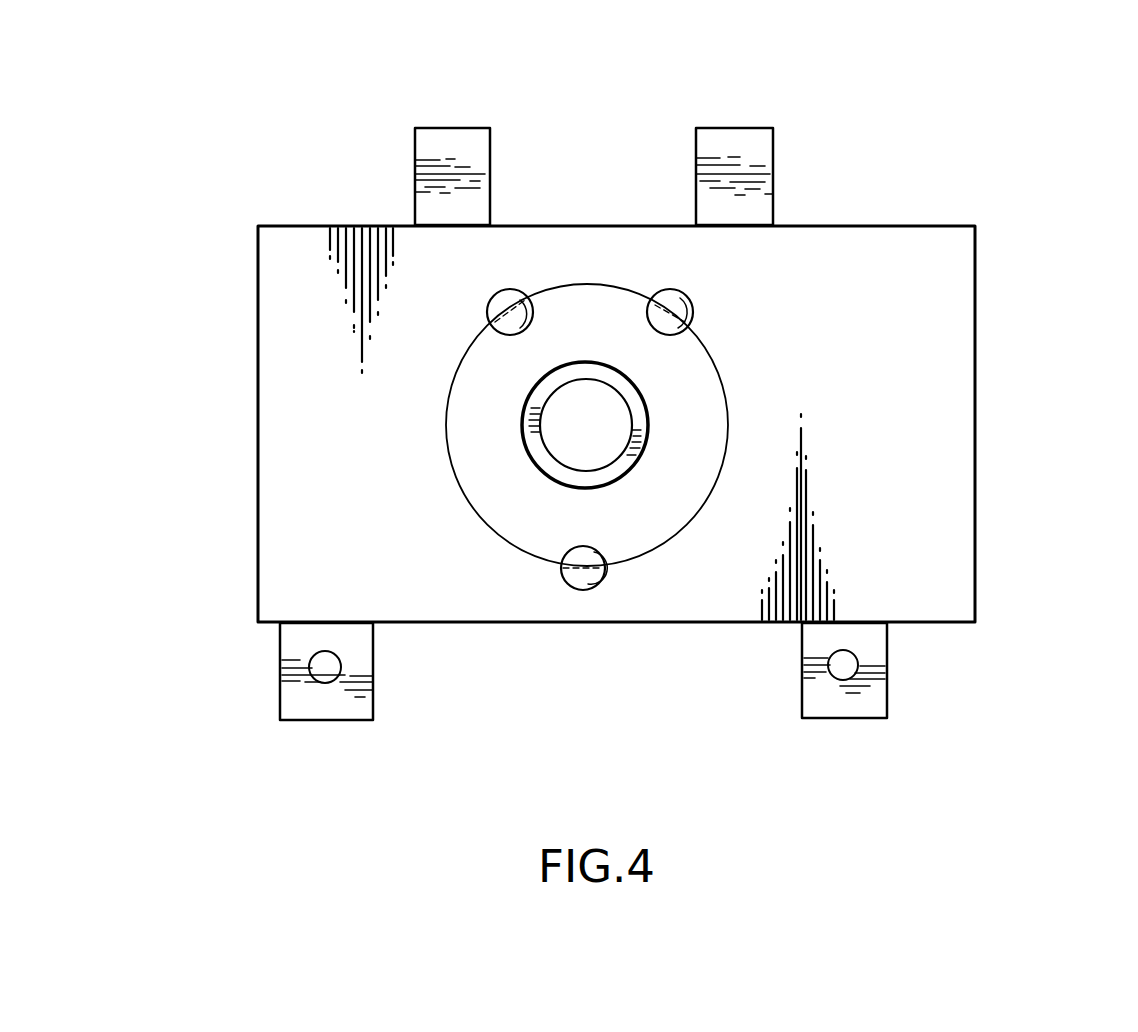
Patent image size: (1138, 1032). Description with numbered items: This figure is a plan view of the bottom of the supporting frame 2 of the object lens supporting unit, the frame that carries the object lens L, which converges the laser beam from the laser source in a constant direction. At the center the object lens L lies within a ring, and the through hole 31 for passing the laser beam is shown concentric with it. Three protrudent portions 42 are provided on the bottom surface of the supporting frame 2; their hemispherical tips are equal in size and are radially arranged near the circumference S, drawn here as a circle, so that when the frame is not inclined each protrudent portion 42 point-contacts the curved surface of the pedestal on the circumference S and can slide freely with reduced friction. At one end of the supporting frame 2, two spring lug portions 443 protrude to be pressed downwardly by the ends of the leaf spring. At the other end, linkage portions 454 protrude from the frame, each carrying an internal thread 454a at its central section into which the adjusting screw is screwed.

The supporting frame 2 is at (945, 505).
The spring lug portions 443 is at (432, 128).
The linkage portion 454 is at (278, 713).
The internal thread 454a is at (333, 680).
The circumference S is at (717, 363).
The object lens L is at (650, 417).
The through hole 31 is at (612, 480).
The protrudent portions 42 is at (517, 290).